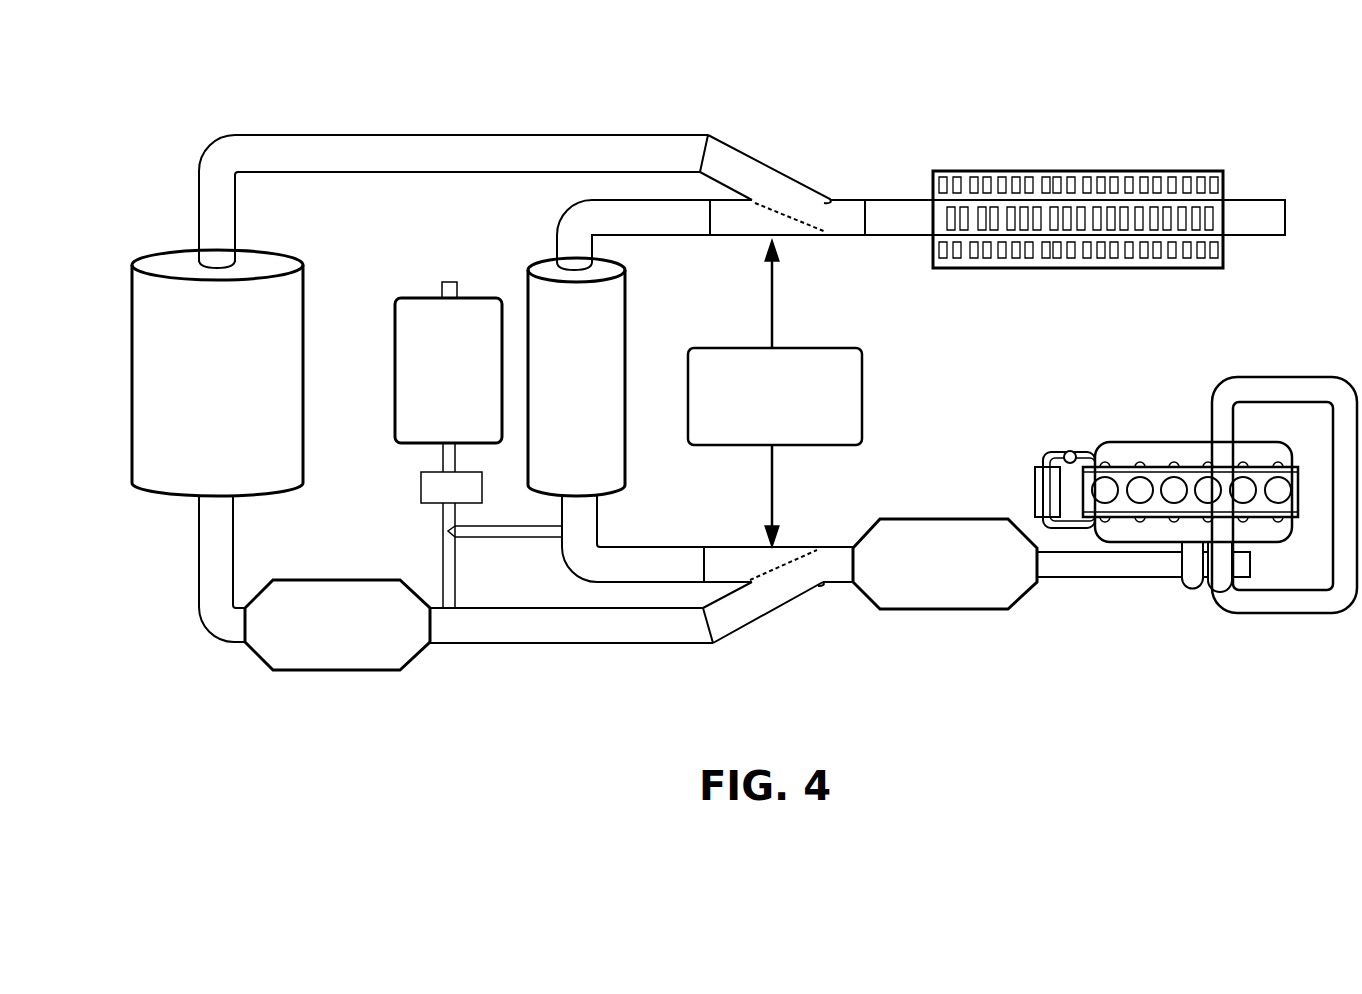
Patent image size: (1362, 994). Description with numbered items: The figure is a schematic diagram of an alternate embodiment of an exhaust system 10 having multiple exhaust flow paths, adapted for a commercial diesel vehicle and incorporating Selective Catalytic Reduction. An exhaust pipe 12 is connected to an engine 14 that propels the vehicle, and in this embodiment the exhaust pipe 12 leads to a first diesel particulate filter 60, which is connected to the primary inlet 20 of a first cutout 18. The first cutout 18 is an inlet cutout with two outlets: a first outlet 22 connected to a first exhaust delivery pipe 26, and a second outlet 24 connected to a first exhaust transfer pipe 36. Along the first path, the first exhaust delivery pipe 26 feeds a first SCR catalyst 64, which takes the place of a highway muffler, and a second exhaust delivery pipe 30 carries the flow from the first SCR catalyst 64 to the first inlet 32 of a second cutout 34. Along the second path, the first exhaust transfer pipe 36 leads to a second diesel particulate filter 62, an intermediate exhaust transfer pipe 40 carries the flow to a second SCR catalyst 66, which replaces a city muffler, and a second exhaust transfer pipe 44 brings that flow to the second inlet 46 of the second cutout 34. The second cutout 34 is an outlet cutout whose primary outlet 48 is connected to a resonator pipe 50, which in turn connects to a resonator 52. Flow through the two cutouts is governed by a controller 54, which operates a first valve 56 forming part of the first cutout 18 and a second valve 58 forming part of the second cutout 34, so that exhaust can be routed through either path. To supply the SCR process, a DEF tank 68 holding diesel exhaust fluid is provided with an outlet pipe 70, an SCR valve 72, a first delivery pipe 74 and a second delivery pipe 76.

The exhaust system 10 is at (1221, 649).
The exhaust pipe 12 is at (1072, 568).
The engine 14 is at (1165, 445).
The first cutout 18 is at (813, 590).
The primary inlet 20 is at (838, 553).
The first outlet 22 is at (717, 555).
The second outlet 24 is at (722, 628).
The first exhaust delivery pipe 26 is at (600, 568).
The second exhaust delivery pipe 30 is at (616, 198).
The first inlet 32 is at (722, 230).
The second cutout 34 is at (775, 226).
The first exhaust transfer pipe 36 is at (570, 632).
The intermediate exhaust transfer pipe 40 is at (208, 578).
The second exhaust transfer pipe 44 is at (233, 152).
The second inlet 46 is at (728, 152).
The primary outlet 48 is at (830, 225).
The resonator pipe 50 is at (917, 210).
The resonator 52 is at (1123, 171).
The controller 54 is at (852, 410).
The first valve 56 is at (783, 553).
The second valve 58 is at (800, 215).
The first diesel particulate filter 60 is at (960, 600).
The second diesel particulate filter 62 is at (270, 650).
The first SCR catalyst 64 is at (548, 296).
The second SCR catalyst 66 is at (168, 258).
The DEF tank 68 is at (397, 298).
The outlet pipe 70 is at (442, 453).
The SCR valve 72 is at (426, 486).
The first delivery pipe 74 is at (500, 530).
The second delivery pipe 76 is at (447, 585).